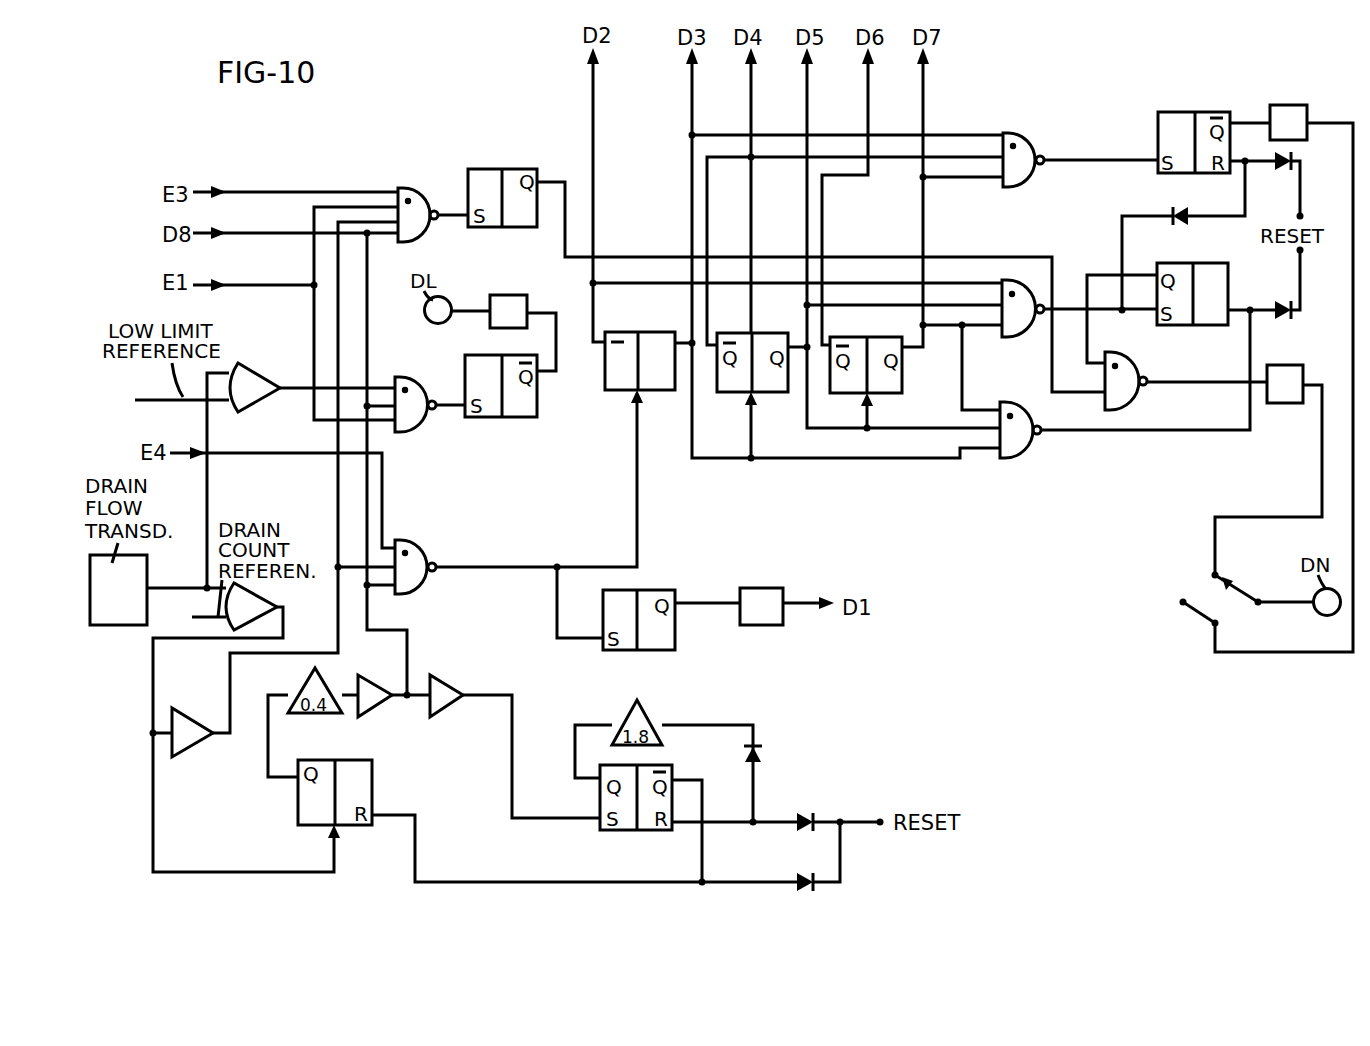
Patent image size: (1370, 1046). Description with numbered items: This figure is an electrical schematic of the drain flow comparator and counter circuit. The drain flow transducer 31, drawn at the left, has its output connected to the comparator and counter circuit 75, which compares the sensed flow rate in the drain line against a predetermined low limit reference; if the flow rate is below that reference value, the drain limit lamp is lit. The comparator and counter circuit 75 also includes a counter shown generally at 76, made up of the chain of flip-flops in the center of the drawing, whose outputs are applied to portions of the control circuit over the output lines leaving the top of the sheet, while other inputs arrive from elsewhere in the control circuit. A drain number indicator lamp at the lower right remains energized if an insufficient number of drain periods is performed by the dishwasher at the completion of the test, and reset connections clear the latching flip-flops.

The drain flow transducer 31 is at (125, 612).
The comparator and counter circuit 75 is at (324, 176).
The counter 76 is at (605, 416).